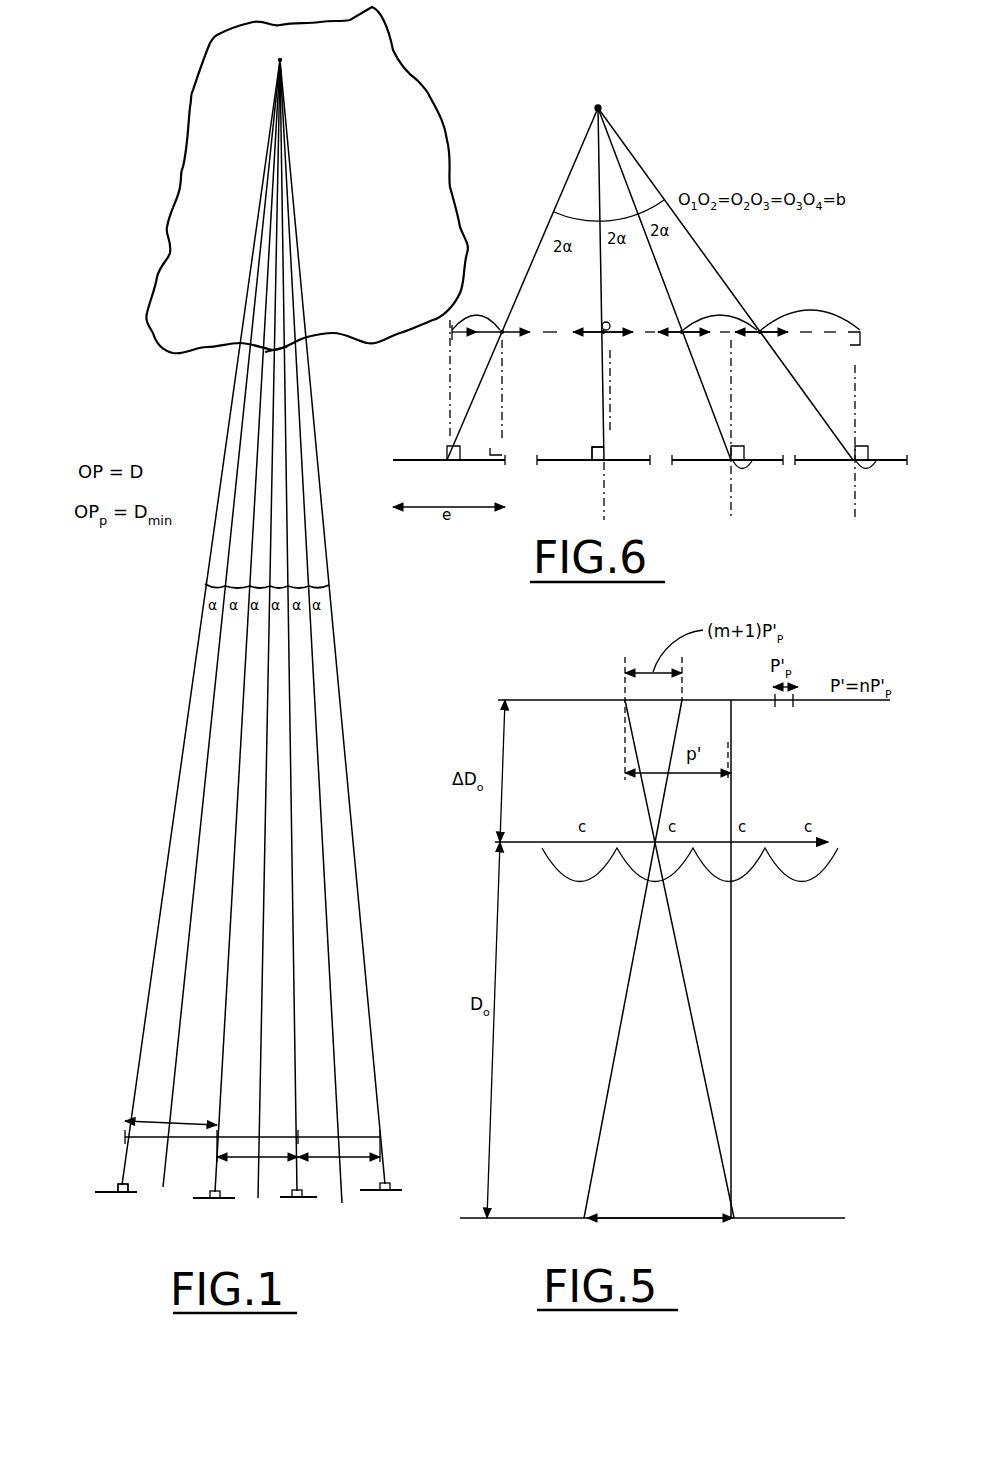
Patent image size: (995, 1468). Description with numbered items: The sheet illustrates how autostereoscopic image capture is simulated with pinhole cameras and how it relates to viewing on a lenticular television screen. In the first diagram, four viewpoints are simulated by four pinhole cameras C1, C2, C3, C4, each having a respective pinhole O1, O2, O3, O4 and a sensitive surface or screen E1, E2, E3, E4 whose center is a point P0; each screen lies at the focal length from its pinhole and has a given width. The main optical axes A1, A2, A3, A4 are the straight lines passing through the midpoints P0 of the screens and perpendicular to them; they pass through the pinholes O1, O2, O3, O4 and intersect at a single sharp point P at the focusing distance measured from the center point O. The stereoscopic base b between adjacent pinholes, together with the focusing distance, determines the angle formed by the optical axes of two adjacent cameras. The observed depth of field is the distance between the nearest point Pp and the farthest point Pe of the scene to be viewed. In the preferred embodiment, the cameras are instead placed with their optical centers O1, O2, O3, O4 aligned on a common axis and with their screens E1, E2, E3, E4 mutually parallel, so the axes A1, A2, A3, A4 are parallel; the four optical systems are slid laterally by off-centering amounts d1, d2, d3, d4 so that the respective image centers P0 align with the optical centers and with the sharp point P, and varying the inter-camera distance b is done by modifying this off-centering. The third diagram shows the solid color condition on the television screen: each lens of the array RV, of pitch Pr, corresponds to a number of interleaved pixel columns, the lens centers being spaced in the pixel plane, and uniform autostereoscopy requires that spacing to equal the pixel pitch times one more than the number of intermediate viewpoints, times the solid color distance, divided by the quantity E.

In FIG. 1, the single point P is at (287, 54).
In FIG. 6, the single point P is at (604, 104).
In FIG. 1, the farthest point Pe is at (372, 9).
In FIG. 1, the nearest point Pp is at (273, 350).
In FIG. 1, the main optical axis A1 is at (131, 1075).
In FIG. 6, the main optical axis A1 is at (433, 398).
In FIG. 1, the main optical axis A2 is at (222, 1071).
In FIG. 6, the main optical axis A2 is at (614, 406).
In FIG. 1, the main optical axis A3 is at (298, 1072).
In FIG. 6, the main optical axis A3 is at (737, 410).
In FIG. 1, the main optical axis A4 is at (377, 1073).
In FIG. 6, the main optical axis A4 is at (858, 412).
In FIG. 1, the center point O is at (270, 629).
In FIG. 1, the pinhole O1 is at (111, 1131).
In FIG. 6, the pinhole O1 is at (503, 336).
In FIG. 1, the pinhole O2 is at (229, 1142).
In FIG. 6, the pinhole O2 is at (606, 336).
In FIG. 1, the pinhole O3 is at (311, 1134).
In FIG. 6, the pinhole O3 is at (681, 336).
In FIG. 1, the pinhole O4 is at (392, 1143).
In FIG. 6, the pinhole O4 is at (759, 336).
In FIG. 1, the pinhole camera C1 is at (96, 1196).
In FIG. 1, the pinhole camera C2 is at (201, 1200).
In FIG. 1, the pinhole camera C3 is at (288, 1204).
In FIG. 1, the pinhole camera C4 is at (375, 1197).
In FIG. 1, the sensitive surface E1 is at (102, 1197).
In FIG. 6, the sensitive surface E1 is at (478, 462).
In FIG. 1, the sensitive surface E2 is at (217, 1200).
In FIG. 6, the sensitive surface E2 is at (627, 462).
In FIG. 1, the sensitive surface E3 is at (312, 1200).
In FIG. 6, the sensitive surface E3 is at (710, 462).
In FIG. 1, the sensitive surface E4 is at (372, 1195).
In FIG. 6, the sensitive surface E4 is at (830, 462).
In FIG. 1, the image center P0 is at (261, 1210).
In FIG. 6, the image center P0 is at (697, 449).
In FIG. 1, the stereoscopic base b is at (252, 1141).
In FIG. 6, the off-centering d1 is at (476, 310).
In FIG. 6, the off-centering d2 is at (618, 310).
In FIG. 6, the off-centering d3 is at (720, 310).
In FIG. 6, the off-centering d4 is at (810, 308).
In FIG. 5, the lens pitch Pr is at (680, 839).
In FIG. 5, the lens array RV is at (840, 848).
In FIG. 5, the viewing distance parameter E is at (652, 1229).